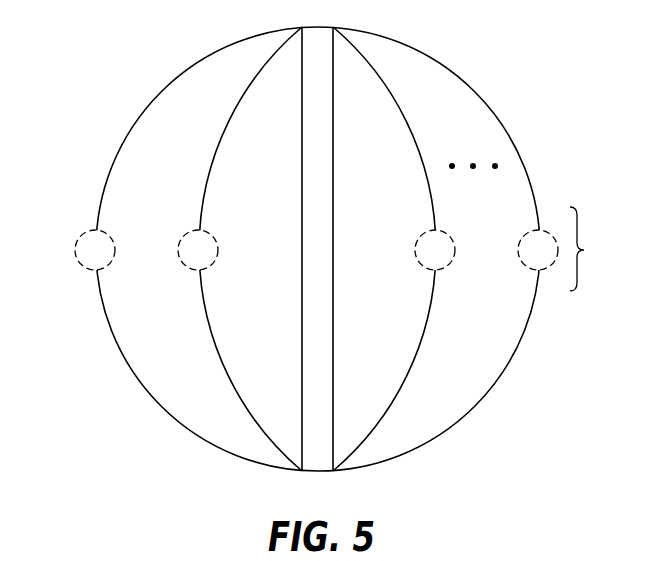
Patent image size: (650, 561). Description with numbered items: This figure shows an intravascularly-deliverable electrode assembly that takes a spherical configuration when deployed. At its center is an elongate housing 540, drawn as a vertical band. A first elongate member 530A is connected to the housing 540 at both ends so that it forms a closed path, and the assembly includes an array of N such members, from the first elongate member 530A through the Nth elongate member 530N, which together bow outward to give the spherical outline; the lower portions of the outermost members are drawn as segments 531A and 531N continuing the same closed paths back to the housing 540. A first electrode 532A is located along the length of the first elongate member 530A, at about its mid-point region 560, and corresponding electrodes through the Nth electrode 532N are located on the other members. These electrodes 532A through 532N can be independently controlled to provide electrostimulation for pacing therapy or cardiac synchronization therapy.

The first elongate member 530A is at (153, 94).
The Nth elongate member 530N is at (483, 94).
The first lower spherical segment surface 531A is at (153, 404).
The Nth lower spherical segment surface 531N is at (481, 404).
The first electrode 532A is at (78, 233).
The Nth electrode 532N is at (524, 233).
The housing 540 is at (302, 251).
The mid-point region 560 is at (594, 249).